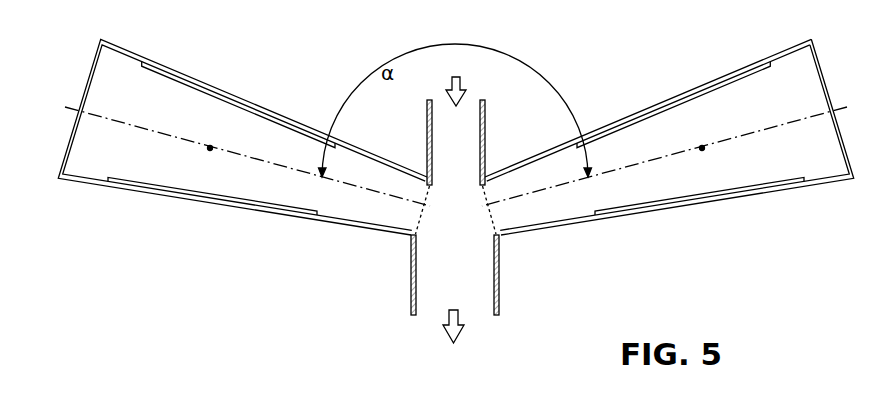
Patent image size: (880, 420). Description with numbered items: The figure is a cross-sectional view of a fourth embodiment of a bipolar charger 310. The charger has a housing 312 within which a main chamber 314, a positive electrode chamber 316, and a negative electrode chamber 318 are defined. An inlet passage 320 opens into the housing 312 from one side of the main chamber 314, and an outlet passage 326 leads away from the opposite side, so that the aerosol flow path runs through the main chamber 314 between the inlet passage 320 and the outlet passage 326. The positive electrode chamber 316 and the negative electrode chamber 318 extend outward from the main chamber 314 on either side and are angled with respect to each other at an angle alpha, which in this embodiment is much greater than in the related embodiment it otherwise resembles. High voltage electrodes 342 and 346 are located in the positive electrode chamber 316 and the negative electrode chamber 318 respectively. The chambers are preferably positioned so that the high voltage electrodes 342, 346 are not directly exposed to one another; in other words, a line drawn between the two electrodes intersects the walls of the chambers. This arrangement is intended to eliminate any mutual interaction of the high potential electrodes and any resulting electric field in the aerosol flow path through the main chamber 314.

The bipolar charger 310 is at (455, 124).
The housing 312 is at (708, 83).
The main chamber 314 is at (472, 236).
The positive electrode chamber 316 is at (737, 122).
The negative electrode chamber 318 is at (172, 112).
The inlet passage 320 is at (485, 132).
The outlet passage 326 is at (499, 263).
The high voltage electrode 342 is at (702, 150).
The high voltage electrode 346 is at (212, 146).